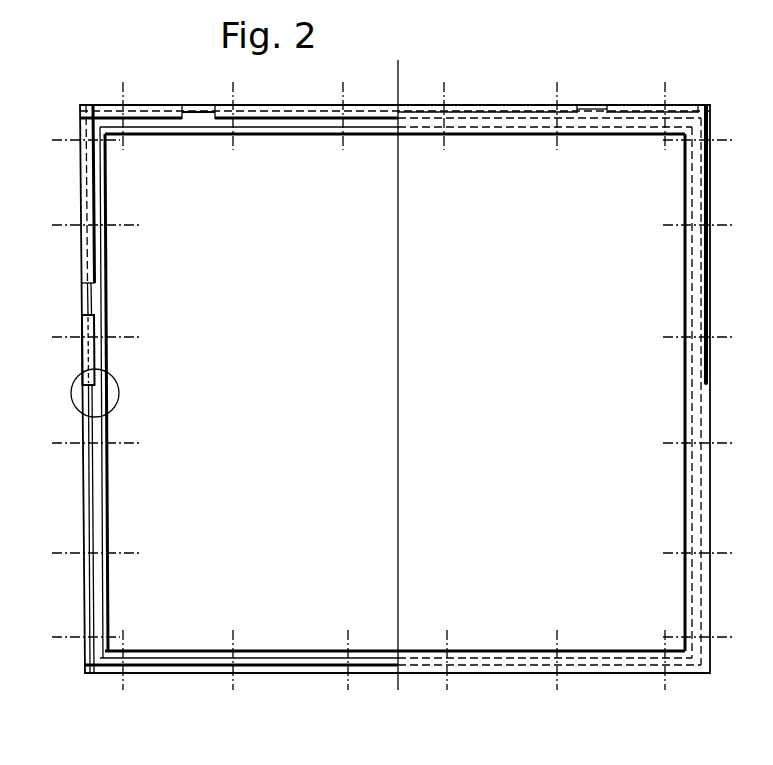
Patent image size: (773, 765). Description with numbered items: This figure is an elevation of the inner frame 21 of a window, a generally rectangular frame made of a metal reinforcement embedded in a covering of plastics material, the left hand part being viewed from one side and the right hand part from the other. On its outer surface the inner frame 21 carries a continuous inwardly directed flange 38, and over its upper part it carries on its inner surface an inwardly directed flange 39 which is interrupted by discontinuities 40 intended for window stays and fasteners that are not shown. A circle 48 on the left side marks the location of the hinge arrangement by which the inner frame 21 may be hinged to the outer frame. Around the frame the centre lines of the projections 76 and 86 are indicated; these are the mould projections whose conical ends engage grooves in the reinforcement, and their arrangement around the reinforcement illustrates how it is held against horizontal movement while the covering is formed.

The inner frame 21 is at (714, 309).
The inwardly directed flange 38 is at (295, 651).
The inwardly directed flange 39 is at (488, 105).
The discontinuities 40 is at (199, 108).
The circle 48 is at (119, 386).
The projections 76 is at (233, 140).
The projections 86 is at (233, 94).